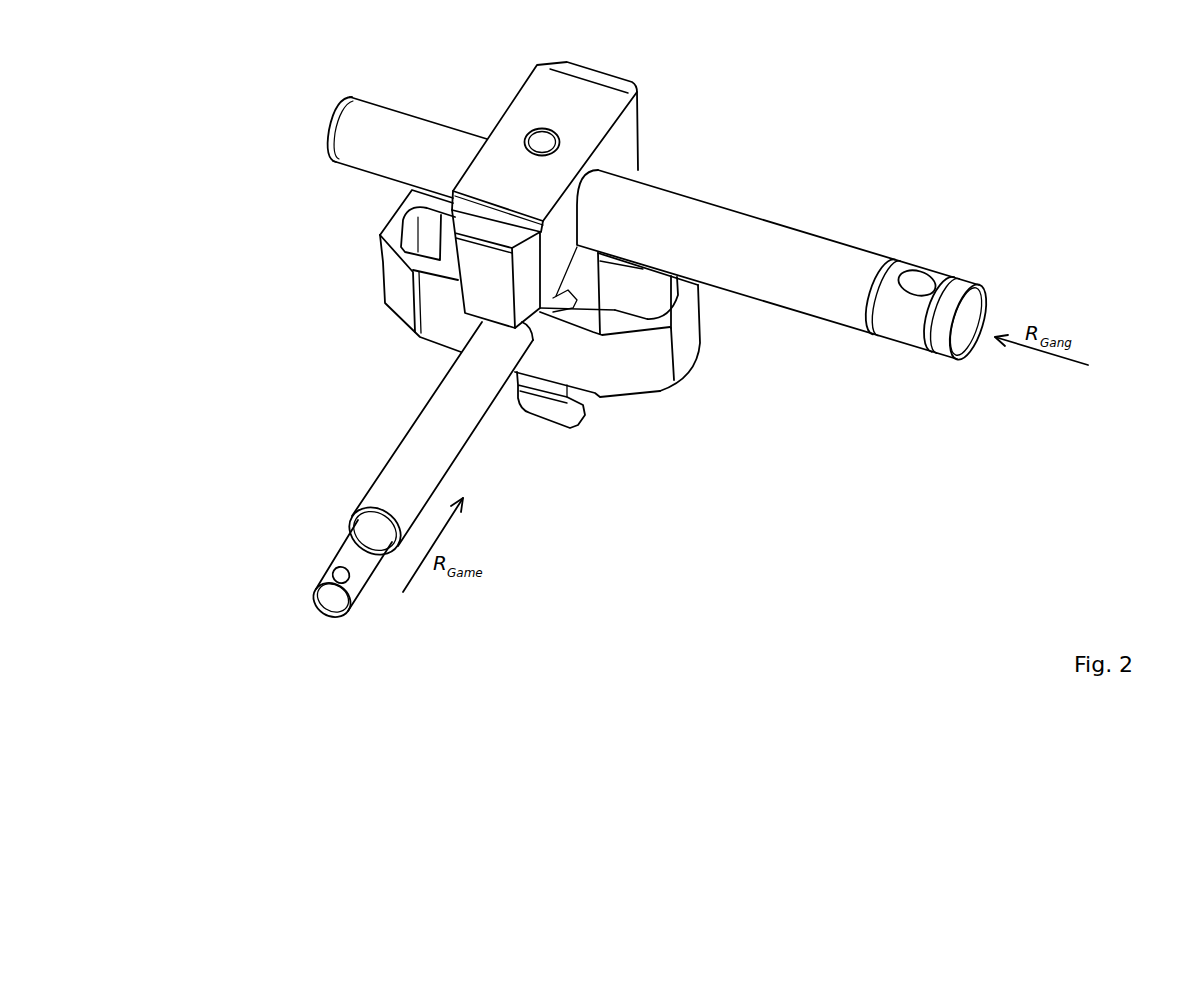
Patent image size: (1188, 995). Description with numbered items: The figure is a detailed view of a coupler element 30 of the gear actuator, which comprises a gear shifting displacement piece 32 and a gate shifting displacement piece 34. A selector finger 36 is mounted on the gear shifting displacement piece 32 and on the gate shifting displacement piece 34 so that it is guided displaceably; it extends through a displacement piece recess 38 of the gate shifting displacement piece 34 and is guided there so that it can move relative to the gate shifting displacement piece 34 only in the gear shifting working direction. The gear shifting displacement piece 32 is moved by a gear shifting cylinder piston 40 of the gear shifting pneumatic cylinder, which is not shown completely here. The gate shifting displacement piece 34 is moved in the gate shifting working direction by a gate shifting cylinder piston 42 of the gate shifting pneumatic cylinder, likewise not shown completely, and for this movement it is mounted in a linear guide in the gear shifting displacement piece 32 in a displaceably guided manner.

The coupler element 30 is at (740, 90).
The gear shifting displacement piece 32 is at (597, 107).
The gate shifting displacement piece 34 is at (647, 377).
The selector finger 36 is at (557, 415).
The displacement piece recess 38 is at (655, 300).
The gear shifting cylinder piston 40 is at (780, 247).
The gate shifting cylinder piston 42 is at (427, 438).